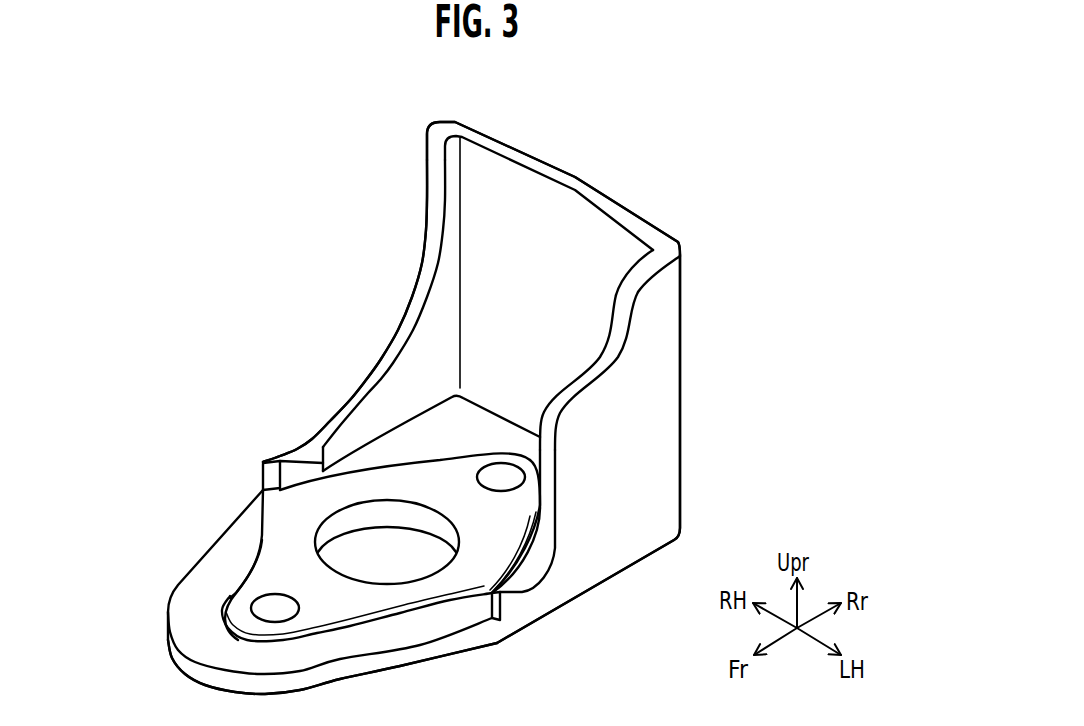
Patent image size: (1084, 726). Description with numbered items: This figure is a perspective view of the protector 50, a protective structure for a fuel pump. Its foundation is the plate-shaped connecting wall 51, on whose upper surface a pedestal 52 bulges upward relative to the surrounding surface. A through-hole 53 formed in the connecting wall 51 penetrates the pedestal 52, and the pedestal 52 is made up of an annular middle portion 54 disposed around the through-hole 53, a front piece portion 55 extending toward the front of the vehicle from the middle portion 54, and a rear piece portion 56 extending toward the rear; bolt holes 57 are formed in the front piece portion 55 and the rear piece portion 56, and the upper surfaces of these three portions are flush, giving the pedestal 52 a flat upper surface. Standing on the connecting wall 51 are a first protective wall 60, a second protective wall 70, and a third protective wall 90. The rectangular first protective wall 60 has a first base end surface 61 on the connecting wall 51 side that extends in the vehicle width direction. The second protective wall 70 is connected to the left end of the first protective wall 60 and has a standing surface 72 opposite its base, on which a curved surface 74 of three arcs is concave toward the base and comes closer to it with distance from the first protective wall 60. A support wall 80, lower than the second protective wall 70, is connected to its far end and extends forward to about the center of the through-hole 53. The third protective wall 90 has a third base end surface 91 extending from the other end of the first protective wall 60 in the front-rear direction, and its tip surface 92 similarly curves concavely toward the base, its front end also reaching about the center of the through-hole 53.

The protector 50 is at (711, 160).
The connecting wall 51 is at (193, 637).
The pedestal 52 is at (408, 603).
The through-hole 53 is at (355, 522).
The middle portion 54 is at (310, 495).
The front piece portion 55 is at (237, 603).
The rear piece portion 56 is at (515, 455).
The bolt holes 57 is at (498, 470).
The first protective wall 60 is at (525, 200).
The first base end surface 61 is at (496, 415).
The second protective wall 70 is at (670, 396).
The standing surface 72 is at (636, 266).
The curved surface 74 is at (609, 348).
The support wall 80 is at (523, 602).
The third protective wall 90 is at (450, 212).
The third base end surface 91 is at (430, 420).
The tip surface 92 is at (407, 330).